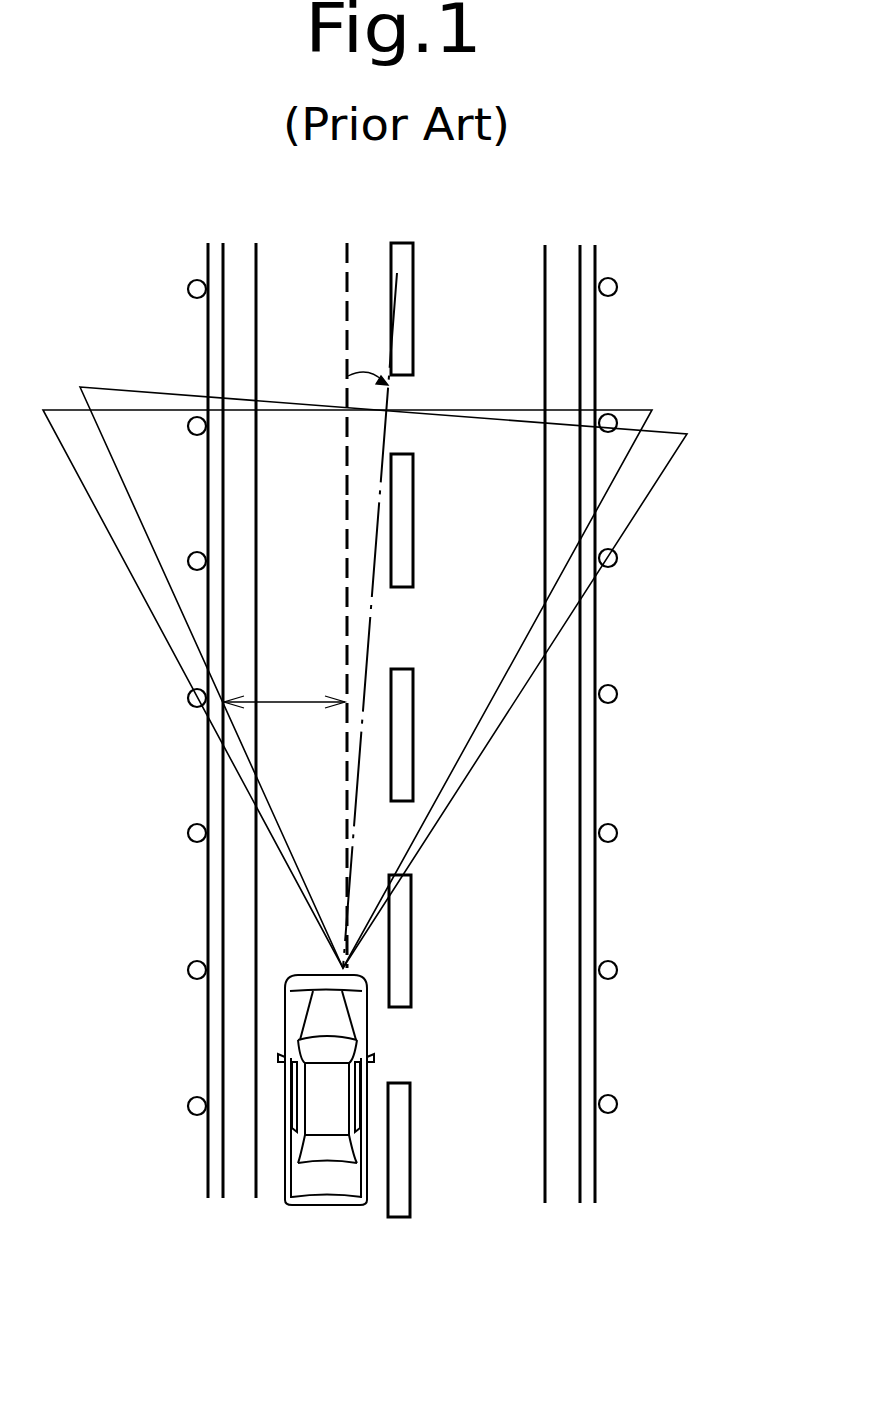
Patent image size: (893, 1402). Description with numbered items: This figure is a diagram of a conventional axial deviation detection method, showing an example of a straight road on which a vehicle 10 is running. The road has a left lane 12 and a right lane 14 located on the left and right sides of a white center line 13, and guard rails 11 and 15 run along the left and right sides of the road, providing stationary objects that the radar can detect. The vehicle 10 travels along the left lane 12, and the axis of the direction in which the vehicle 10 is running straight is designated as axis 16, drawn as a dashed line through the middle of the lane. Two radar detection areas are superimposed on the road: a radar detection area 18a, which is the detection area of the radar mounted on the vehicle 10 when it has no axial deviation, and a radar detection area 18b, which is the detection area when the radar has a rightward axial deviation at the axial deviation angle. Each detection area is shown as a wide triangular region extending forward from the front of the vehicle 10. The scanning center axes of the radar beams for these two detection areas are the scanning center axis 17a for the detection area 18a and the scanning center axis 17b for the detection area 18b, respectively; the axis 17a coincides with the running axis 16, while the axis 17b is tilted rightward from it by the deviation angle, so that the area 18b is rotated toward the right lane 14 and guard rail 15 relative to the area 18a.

The vehicle 10 is at (333, 1093).
The guard rail 11 is at (213, 1183).
The left lane 12 is at (372, 1185).
The white center line 13 is at (399, 1200).
The right lane 14 is at (473, 1183).
The guard rail 15 is at (585, 1192).
The axis of the running direction 16 is at (340, 242).
The scanning center axis 17a is at (346, 348).
The scanning center axis 17b is at (392, 398).
The radar detection area 18a is at (632, 410).
The radar detection area 18b is at (653, 497).